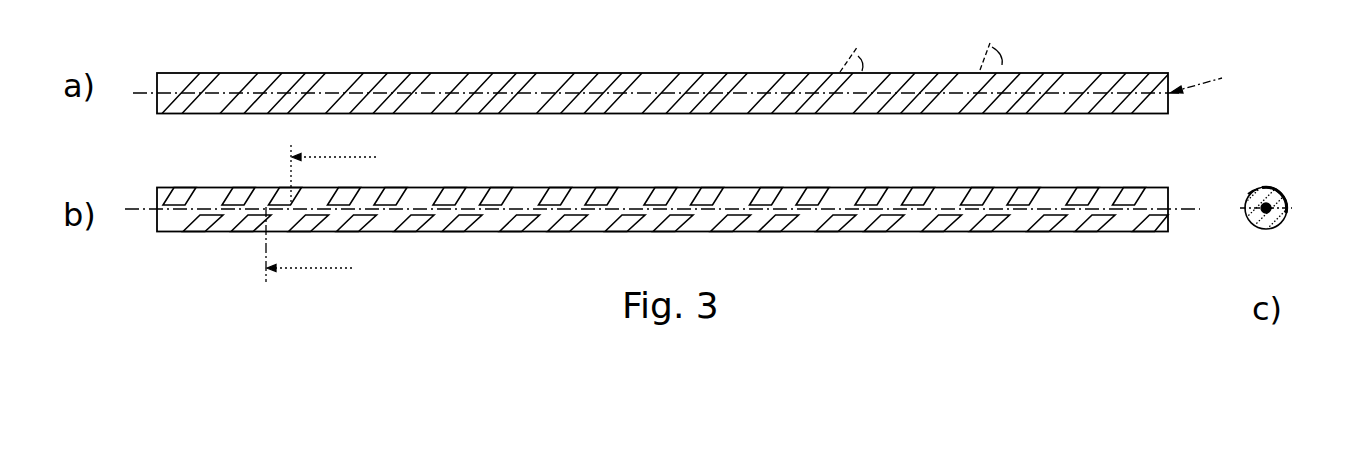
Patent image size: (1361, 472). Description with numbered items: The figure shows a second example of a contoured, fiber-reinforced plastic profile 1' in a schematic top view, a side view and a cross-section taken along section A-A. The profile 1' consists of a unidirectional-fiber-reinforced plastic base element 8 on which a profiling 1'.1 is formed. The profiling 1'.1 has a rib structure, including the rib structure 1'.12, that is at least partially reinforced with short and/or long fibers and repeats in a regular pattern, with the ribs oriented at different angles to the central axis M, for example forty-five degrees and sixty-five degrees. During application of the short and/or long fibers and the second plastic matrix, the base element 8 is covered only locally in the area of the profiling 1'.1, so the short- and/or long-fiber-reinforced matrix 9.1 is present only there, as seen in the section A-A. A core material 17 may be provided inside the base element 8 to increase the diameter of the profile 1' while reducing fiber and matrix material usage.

The contoured fiber-reinforced plastic profile 1' is at (662, 152).
The profiling 1'.1 is at (1115, 151).
The second rib structure 1'.12 is at (1015, 151).
The fiber-reinforced plastic base element 8 is at (1254, 226).
The short- and/or long-fiber-reinforced matrix 9.1 is at (1254, 193).
The core material 17 is at (1279, 226).
The central axis M is at (1207, 79).
The section A- A is at (321, 207).